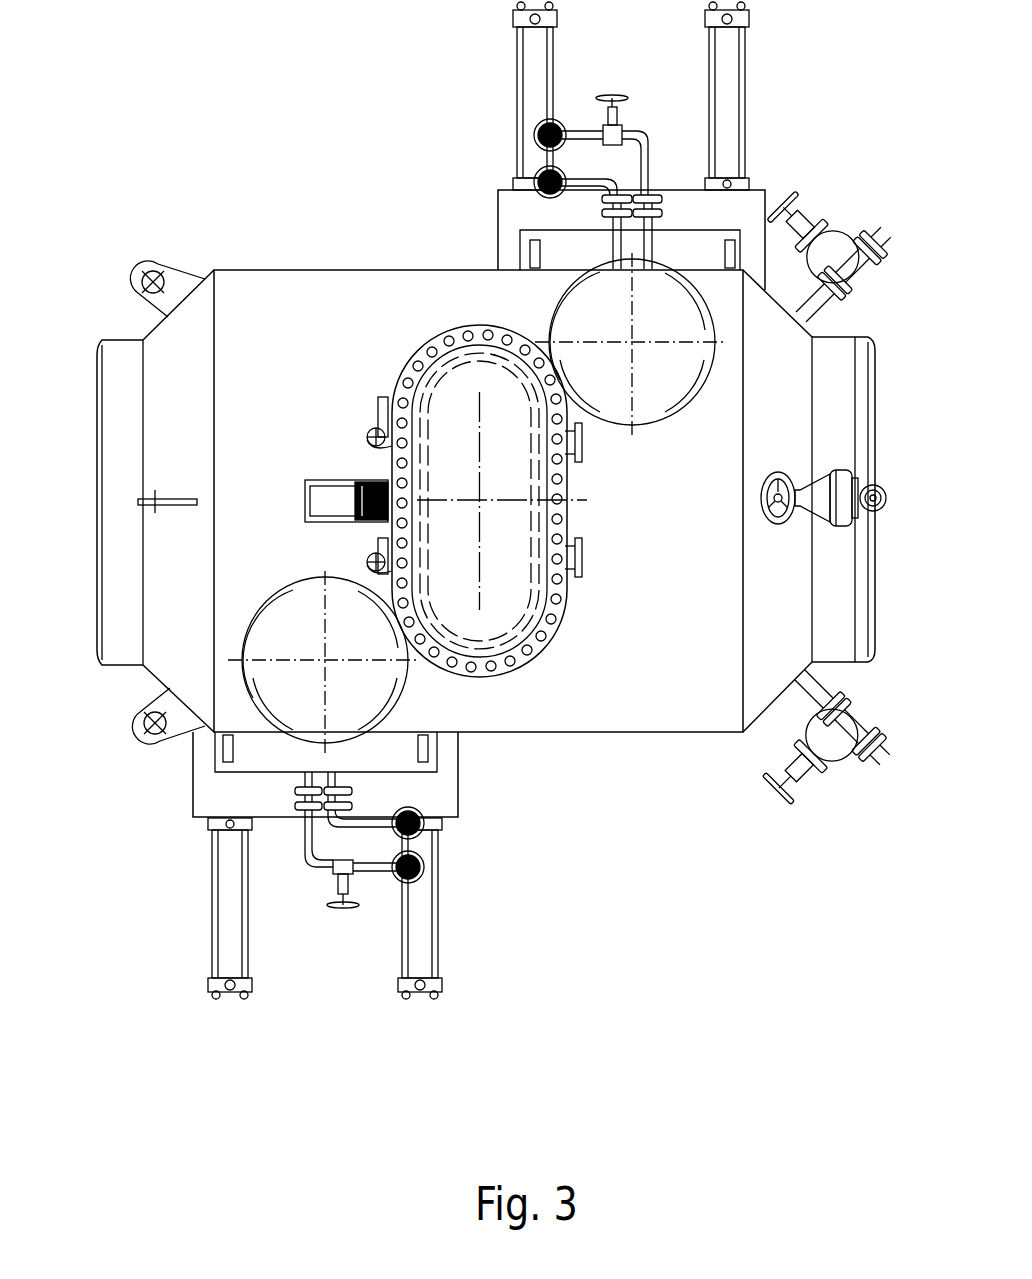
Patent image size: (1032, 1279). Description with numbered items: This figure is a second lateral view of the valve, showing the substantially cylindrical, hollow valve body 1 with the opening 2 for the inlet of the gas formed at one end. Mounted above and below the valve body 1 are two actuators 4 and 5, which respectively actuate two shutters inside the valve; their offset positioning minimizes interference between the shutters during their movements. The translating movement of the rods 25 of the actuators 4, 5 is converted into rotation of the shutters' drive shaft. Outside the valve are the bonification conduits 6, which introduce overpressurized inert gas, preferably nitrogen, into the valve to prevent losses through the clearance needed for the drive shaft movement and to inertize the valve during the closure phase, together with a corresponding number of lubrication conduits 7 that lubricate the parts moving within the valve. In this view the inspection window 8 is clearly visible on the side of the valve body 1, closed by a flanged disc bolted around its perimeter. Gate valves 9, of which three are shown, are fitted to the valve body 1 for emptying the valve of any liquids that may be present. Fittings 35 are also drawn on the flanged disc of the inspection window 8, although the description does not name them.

The valve body 1 is at (252, 178).
The opening for the inlet of the gas 2 is at (98, 438).
The actuator 4 is at (197, 805).
The actuator 5 is at (505, 212).
The bonification conduit 6 is at (573, 183).
The lubrication conduit 7 is at (633, 133).
The inspection window 8 is at (455, 383).
The gate valve 9 is at (822, 226).
The rod 25 is at (520, 57).
The hinge / latch 35 is at (378, 408).